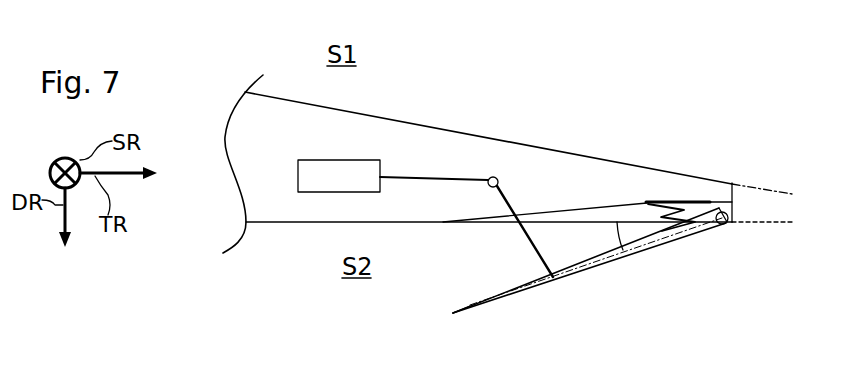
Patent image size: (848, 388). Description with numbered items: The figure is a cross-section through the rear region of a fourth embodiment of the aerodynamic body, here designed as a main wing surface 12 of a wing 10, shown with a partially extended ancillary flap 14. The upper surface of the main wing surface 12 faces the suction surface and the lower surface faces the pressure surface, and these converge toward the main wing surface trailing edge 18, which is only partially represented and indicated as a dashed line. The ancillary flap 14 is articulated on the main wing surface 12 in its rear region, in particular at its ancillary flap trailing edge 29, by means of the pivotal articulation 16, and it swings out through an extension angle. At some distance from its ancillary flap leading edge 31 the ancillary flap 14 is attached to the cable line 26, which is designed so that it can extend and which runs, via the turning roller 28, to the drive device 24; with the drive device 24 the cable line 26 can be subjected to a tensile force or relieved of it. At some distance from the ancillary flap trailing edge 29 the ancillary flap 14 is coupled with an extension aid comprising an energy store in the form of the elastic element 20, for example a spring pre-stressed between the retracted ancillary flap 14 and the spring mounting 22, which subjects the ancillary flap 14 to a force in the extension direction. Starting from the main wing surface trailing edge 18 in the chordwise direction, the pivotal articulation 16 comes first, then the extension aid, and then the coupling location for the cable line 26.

The wing 10 is at (537, 98).
The main wing surface 12 is at (598, 157).
The ancillary flap 14 is at (648, 251).
The pivotal articulation 16 is at (722, 226).
The main wing surface trailing edge 18 is at (758, 197).
The elastic element 20 is at (645, 203).
The spring mounting 22 is at (672, 212).
The drive device 24 is at (316, 160).
The cable line 26 is at (457, 177).
The turning roller 28 is at (499, 180).
The ancillary flap trailing edge 29 is at (734, 225).
The ancillary flap leading edge 31 is at (453, 313).